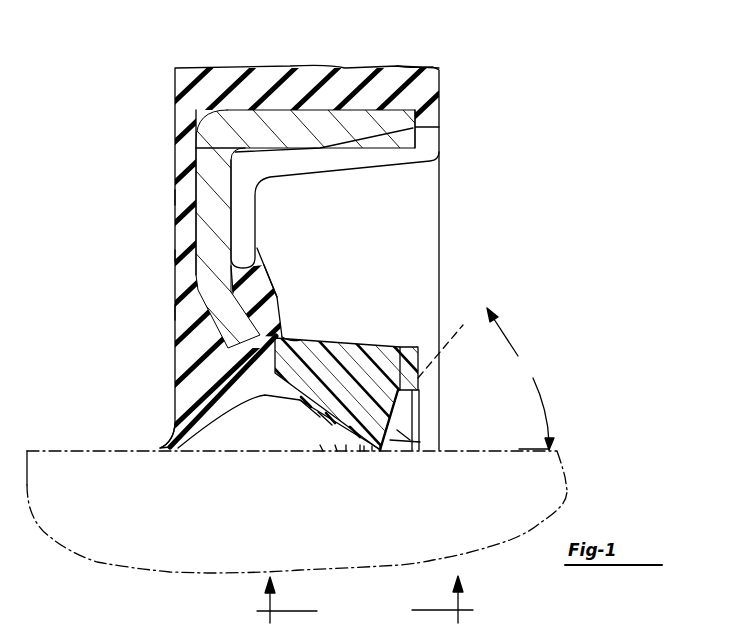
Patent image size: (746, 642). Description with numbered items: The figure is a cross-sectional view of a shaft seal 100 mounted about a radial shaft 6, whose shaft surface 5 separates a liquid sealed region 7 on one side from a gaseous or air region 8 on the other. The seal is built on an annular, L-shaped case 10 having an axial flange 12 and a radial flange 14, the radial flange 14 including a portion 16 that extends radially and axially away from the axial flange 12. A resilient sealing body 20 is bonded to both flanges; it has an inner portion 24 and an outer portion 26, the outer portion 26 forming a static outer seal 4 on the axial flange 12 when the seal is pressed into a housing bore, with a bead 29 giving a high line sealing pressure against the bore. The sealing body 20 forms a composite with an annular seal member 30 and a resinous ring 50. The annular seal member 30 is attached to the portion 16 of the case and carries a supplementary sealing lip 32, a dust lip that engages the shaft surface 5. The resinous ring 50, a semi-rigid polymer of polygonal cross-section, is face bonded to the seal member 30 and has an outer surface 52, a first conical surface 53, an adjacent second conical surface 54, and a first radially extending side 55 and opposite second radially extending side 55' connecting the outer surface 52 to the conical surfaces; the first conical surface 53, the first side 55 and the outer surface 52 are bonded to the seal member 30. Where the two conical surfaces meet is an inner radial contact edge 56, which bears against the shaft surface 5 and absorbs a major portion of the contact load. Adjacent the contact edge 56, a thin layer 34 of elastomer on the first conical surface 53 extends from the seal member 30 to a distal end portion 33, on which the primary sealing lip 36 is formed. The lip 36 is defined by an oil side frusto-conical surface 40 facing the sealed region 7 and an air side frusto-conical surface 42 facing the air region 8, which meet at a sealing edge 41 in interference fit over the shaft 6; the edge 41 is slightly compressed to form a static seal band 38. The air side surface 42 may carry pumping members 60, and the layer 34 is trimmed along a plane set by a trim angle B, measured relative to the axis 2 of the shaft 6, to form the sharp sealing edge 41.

The axis 2 is at (87, 627).
The static outer seal 4 is at (248, 68).
The shaft surface 5 is at (519, 449).
The radial shaft 6 is at (565, 477).
The sealed region 7 is at (545, 270).
The air region 8 is at (60, 277).
The case 10 is at (196, 153).
The axial flange 12 is at (311, 105).
The radial flange 14 is at (196, 223).
The portion of radial flange 16 is at (196, 312).
The resilient sealing body 20 is at (175, 197).
The inner portion 24 is at (268, 270).
The outer portion 26 is at (175, 257).
The bead 29 is at (397, 66).
The annular seal member 30 is at (283, 338).
The supplementary sealing lip 32 is at (180, 408).
The distal end portion 33 is at (346, 451).
The layer of elastomeric material 34 is at (332, 420).
The primary sealing lip 36 is at (337, 451).
The static seal band 38 is at (372, 451).
The first frusto-conical surface 40 is at (380, 451).
The sealing edge 41 is at (364, 451).
The second frusto-conical surface 42 is at (360, 451).
The resinous ring 50 is at (350, 340).
The outer surface 52 is at (375, 340).
The first conical surface 53 is at (313, 403).
The second conical surface 54 is at (397, 440).
The first radially extending side 55 is at (275, 393).
The second radially extending side 55' is at (434, 385).
The inner radial contact edge 56 is at (390, 442).
The pumping members 60 is at (323, 451).
The shaft seal 100 is at (493, 206).
The trim angle B is at (520, 379).